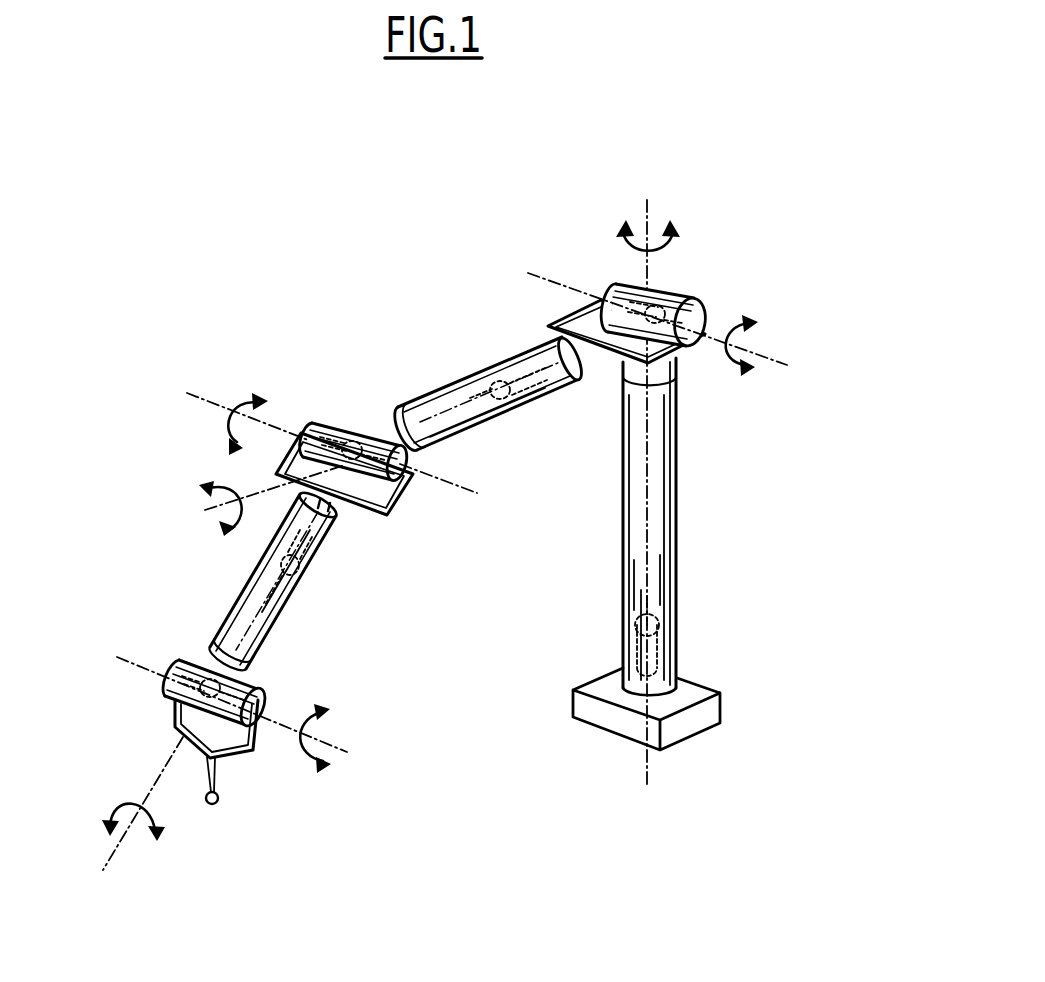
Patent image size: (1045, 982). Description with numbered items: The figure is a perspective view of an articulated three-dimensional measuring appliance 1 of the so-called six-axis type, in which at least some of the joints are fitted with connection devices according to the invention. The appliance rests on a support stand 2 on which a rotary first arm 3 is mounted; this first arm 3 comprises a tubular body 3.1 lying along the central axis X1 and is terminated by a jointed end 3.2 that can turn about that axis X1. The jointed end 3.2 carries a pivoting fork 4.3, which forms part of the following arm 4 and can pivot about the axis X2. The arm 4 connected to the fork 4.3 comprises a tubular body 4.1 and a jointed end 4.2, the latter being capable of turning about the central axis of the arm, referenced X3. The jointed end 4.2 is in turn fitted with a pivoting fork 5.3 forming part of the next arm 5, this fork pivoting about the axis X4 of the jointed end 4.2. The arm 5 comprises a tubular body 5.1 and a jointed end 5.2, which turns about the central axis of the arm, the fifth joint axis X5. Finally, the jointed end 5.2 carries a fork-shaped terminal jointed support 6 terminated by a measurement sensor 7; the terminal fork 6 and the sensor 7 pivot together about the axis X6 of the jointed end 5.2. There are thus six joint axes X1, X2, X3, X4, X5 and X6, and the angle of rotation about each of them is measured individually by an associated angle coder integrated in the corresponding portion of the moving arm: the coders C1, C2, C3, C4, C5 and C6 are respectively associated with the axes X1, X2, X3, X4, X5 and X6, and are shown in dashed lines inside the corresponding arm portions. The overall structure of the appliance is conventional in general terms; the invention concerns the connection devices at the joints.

The articulated three-dimensional measuring appliance 1 is at (762, 213).
The support stand 2 is at (713, 710).
The rotary first arm 3 is at (705, 526).
The tubular body 3.1 is at (667, 573).
The jointed end 3.2 is at (698, 273).
The following arm 4 is at (451, 374).
The tubular body 4.1 is at (470, 410).
The jointed end 4.2 is at (358, 396).
The pivoting fork 4.3 is at (572, 322).
The following arm 5 is at (252, 608).
The tubular body 5.1 is at (277, 606).
The jointed end 5.2 is at (233, 665).
The pivoting fork 5.3 is at (400, 493).
The terminal fork 6 is at (258, 758).
The measurement sensor 7 is at (215, 806).
The angle coder C1 is at (663, 648).
The angle coder C2 is at (660, 302).
The angle coder C3 is at (543, 383).
The angle coder C4 is at (358, 445).
The angle coder C5 is at (313, 537).
The angle coder C6 is at (245, 683).
The central axis X1 is at (648, 213).
The pivot axis X2 is at (786, 366).
The central axis X3 is at (212, 520).
The pivot axis X4 is at (203, 400).
The joint axis X5 is at (103, 870).
The pivot axis X6 is at (117, 657).